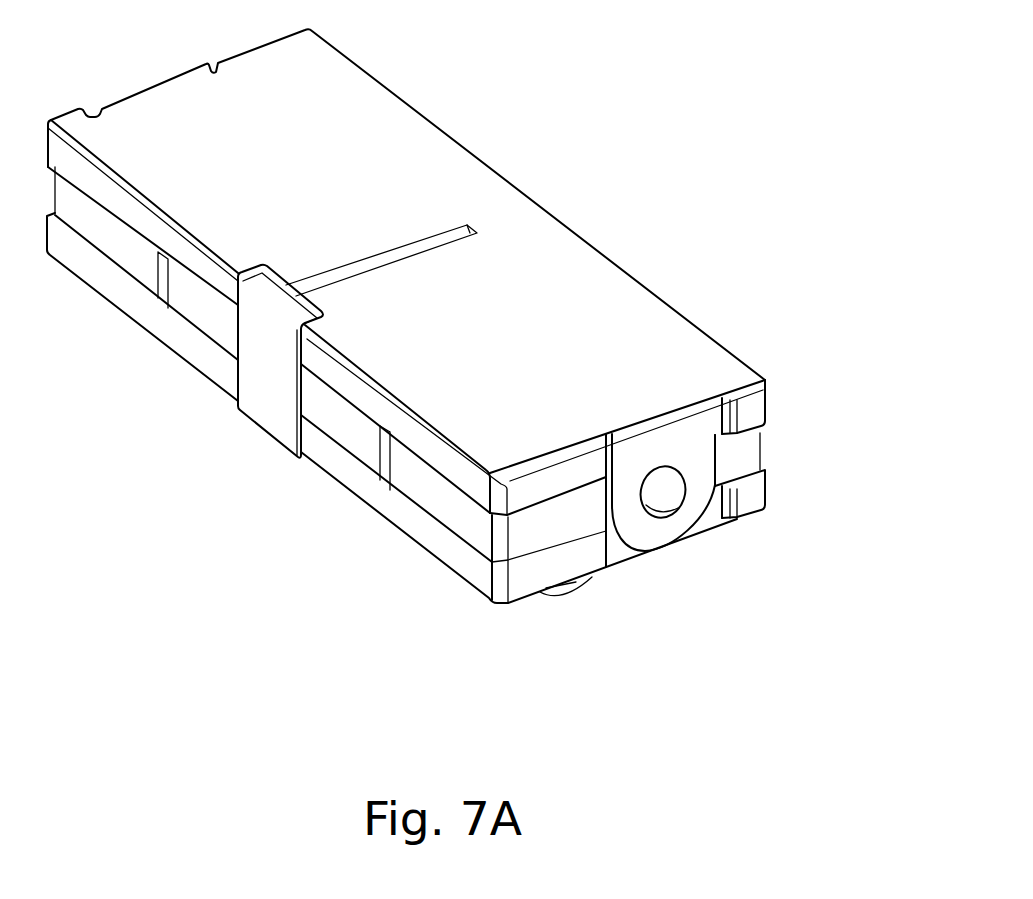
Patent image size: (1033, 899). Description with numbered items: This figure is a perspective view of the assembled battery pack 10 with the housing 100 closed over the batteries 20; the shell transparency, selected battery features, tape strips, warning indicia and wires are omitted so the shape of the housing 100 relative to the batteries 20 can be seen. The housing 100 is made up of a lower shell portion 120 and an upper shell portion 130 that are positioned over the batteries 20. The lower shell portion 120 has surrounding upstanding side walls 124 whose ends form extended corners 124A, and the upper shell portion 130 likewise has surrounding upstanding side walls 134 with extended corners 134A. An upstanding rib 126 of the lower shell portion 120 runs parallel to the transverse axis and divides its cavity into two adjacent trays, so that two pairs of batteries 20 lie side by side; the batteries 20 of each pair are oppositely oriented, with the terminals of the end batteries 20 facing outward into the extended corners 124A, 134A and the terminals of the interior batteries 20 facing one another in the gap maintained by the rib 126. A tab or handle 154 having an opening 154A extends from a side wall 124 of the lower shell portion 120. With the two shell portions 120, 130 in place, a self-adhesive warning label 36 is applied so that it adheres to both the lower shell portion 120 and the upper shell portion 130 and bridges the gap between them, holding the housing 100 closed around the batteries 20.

The battery pack 10 is at (653, 77).
The housing 100 is at (462, 107).
The lower shell portion 120 is at (640, 274).
The side walls 124 is at (398, 423).
The extended corners 124A is at (552, 482).
The upstanding rib 126 is at (397, 256).
The upper shell portion 130 is at (402, 558).
The side walls 134 is at (620, 553).
The extended corners 134A is at (745, 498).
The tab or handle 154 is at (663, 530).
The opening 154A is at (668, 512).
The batteries 20 is at (198, 312).
The self-adhesive warning label 36 is at (277, 417).